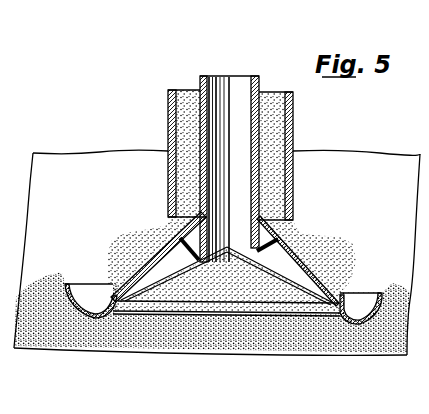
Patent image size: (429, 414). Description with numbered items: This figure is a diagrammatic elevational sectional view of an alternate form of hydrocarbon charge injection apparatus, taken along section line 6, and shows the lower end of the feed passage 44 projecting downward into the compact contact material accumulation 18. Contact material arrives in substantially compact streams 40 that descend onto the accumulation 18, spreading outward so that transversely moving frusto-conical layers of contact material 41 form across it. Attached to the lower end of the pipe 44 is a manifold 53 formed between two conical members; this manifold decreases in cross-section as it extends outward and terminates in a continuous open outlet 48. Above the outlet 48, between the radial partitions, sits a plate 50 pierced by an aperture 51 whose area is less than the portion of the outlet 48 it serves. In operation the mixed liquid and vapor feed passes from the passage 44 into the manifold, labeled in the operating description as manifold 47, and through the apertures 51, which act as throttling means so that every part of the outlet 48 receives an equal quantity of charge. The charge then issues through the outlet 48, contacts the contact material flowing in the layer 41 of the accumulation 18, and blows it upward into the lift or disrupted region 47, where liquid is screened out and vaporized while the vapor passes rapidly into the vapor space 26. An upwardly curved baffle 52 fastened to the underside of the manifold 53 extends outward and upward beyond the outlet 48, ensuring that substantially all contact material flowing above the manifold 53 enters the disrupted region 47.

The section line 6- 6 is at (82, 205).
The compact contact material accumulation 18 is at (264, 300).
The vapor space 26 is at (362, 160).
The compact streams of contact material 40 is at (186, 114).
The frusto-conical layers of contact material 41 is at (312, 260).
The passage 44 is at (243, 127).
The lift or disrupted region 47 is at (83, 277).
The continuous open outlet 48 is at (341, 324).
The plate 50 is at (281, 238).
The aperture 51 is at (268, 252).
The upwardly curved baffle 52 is at (363, 327).
The manifold 53 is at (142, 258).